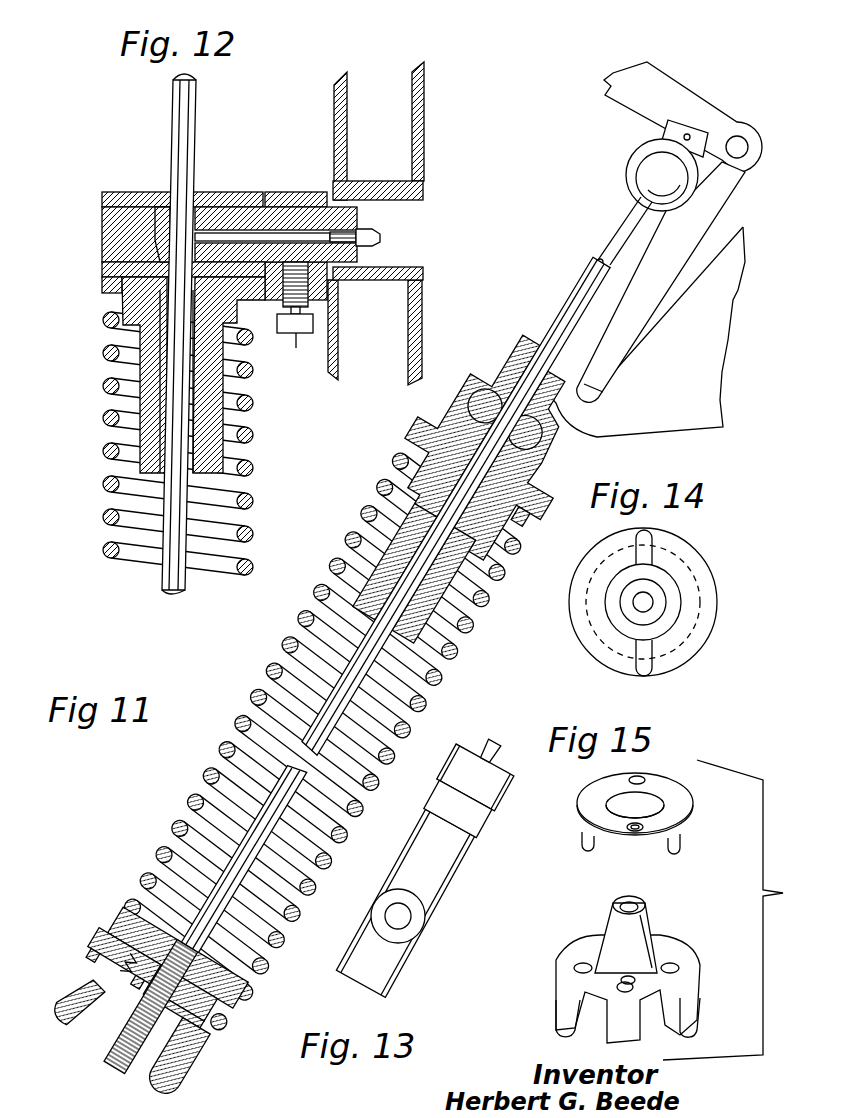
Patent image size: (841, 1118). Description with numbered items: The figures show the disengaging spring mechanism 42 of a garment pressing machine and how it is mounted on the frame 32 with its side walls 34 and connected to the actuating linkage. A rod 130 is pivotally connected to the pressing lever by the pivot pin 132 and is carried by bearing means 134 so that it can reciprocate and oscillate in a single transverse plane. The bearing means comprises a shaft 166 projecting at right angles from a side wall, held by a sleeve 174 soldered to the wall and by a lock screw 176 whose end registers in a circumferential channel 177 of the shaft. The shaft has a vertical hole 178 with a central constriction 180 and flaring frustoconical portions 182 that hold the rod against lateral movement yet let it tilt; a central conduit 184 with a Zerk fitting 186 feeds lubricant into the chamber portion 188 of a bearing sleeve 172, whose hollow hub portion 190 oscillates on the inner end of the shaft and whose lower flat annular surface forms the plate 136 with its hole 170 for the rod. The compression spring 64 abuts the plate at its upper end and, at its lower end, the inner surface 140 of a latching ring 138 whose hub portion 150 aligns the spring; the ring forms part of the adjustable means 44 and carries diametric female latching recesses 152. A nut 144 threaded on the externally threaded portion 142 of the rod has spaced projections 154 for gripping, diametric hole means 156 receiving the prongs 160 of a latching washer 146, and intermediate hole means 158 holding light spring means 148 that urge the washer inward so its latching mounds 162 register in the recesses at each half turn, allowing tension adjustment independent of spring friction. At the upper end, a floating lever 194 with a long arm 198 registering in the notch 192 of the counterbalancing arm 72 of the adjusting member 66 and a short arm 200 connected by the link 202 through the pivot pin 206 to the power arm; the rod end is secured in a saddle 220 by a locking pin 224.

In FIG. 12, the frame 32 is at (425, 140).
In FIG. 12, the side walls 34 is at (426, 92).
In FIG. 12, the disengaging spring mechanism 42 is at (182, 576).
In FIG. 11, the disengaging spring mechanism 42 is at (595, 272).
In FIG. 11, the adjustable means 44 is at (110, 1020).
In FIG. 12, the compression spring 64 is at (232, 500).
In FIG. 11, the compression spring 64 is at (197, 798).
In FIG. 11, the adjusting member 66 is at (728, 392).
In FIG. 11, the counterbalancing arm 72 is at (607, 428).
In FIG. 12, the rod 130 is at (186, 544).
In FIG. 11, the rod 130 is at (575, 305).
In FIG. 11, the pivot pin 132 is at (655, 178).
In FIG. 12, the bearing means 134 is at (220, 395).
In FIG. 11, the bearing means 134 is at (462, 572).
In FIG. 12, the plate 136 is at (104, 286).
In FIG. 11, the plate 136 is at (540, 512).
In FIG. 11, the latching ring 138 is at (212, 1025).
In FIG. 14, the latching ring 138 is at (716, 616).
In FIG. 15, the latching ring 138 is at (660, 975).
In FIG. 11, the inner surface 140 is at (222, 1012).
In FIG. 14, the inner surface 140 is at (722, 595).
In FIG. 11, the externally threaded portion 142 is at (112, 1070).
In FIG. 11, the nut 144 is at (185, 1080).
In FIG. 15, the nut 144 is at (560, 1020).
In FIG. 11, the latching washer 146 is at (108, 965).
In FIG. 15, the latching washer 146 is at (692, 792).
In FIG. 11, the spring means 148 is at (95, 982).
In FIG. 15, the spring means 148 is at (612, 1012).
In FIG. 11, the hub portion 150 is at (232, 976).
In FIG. 14, the hub portion 150 is at (700, 580).
In FIG. 14, the female latching recesses 152 is at (650, 550).
In FIG. 11, the spaced projections 154 is at (72, 1002).
In FIG. 15, the spaced projections 154 is at (695, 998).
In FIG. 15, the hole means 156 is at (580, 963).
In FIG. 15, the hole means 158 is at (633, 1000).
In FIG. 15, the prongs 160 is at (586, 840).
In FIG. 15, the latching mounds 162 is at (630, 780).
In FIG. 12, the shaft 166 is at (280, 215).
In FIG. 13, the shaft 166 is at (462, 870).
In FIG. 12, the hole 170 is at (130, 300).
In FIG. 12, the bearing sleeve 172 is at (200, 185).
In FIG. 11, the bearing sleeve 172 is at (400, 525).
In FIG. 12, the sleeve 174 is at (425, 200).
In FIG. 12, the lock screw 176 is at (296, 315).
In FIG. 12, the circumferential channel 177 is at (300, 210).
In FIG. 13, the circumferential channel 177 is at (440, 806).
In FIG. 12, the vertical hole 178 is at (150, 205).
In FIG. 13, the vertical hole 178 is at (405, 935).
In FIG. 12, the central constriction 180 is at (160, 215).
In FIG. 13, the central constriction 180 is at (412, 917).
In FIG. 12, the frustoconical portions 182 is at (160, 205).
In FIG. 11, the frustoconical portions 182 is at (500, 402).
In FIG. 13, the frustoconical portions 182 is at (385, 908).
In FIG. 12, the central conduit 184 is at (318, 210).
In FIG. 12, the Zerk fitting 186 is at (382, 238).
In FIG. 13, the Zerk fitting 186 is at (490, 742).
In FIG. 12, the lubricant containing chamber portion 188 is at (210, 345).
In FIG. 12, the hollow hub portion 190 is at (108, 240).
In FIG. 11, the hollow hub portion 190 is at (485, 420).
In FIG. 11, the notch 192 is at (577, 362).
In FIG. 11, the floating lever 194 is at (598, 262).
In FIG. 11, the long arm 198 is at (592, 325).
In FIG. 11, the short arm 200 is at (725, 175).
In FIG. 11, the link 202 is at (640, 105).
In FIG. 11, the pivot pin 206 is at (742, 145).
In FIG. 11, the saddle 220 is at (640, 160).
In FIG. 11, the locking pin 224 is at (690, 134).